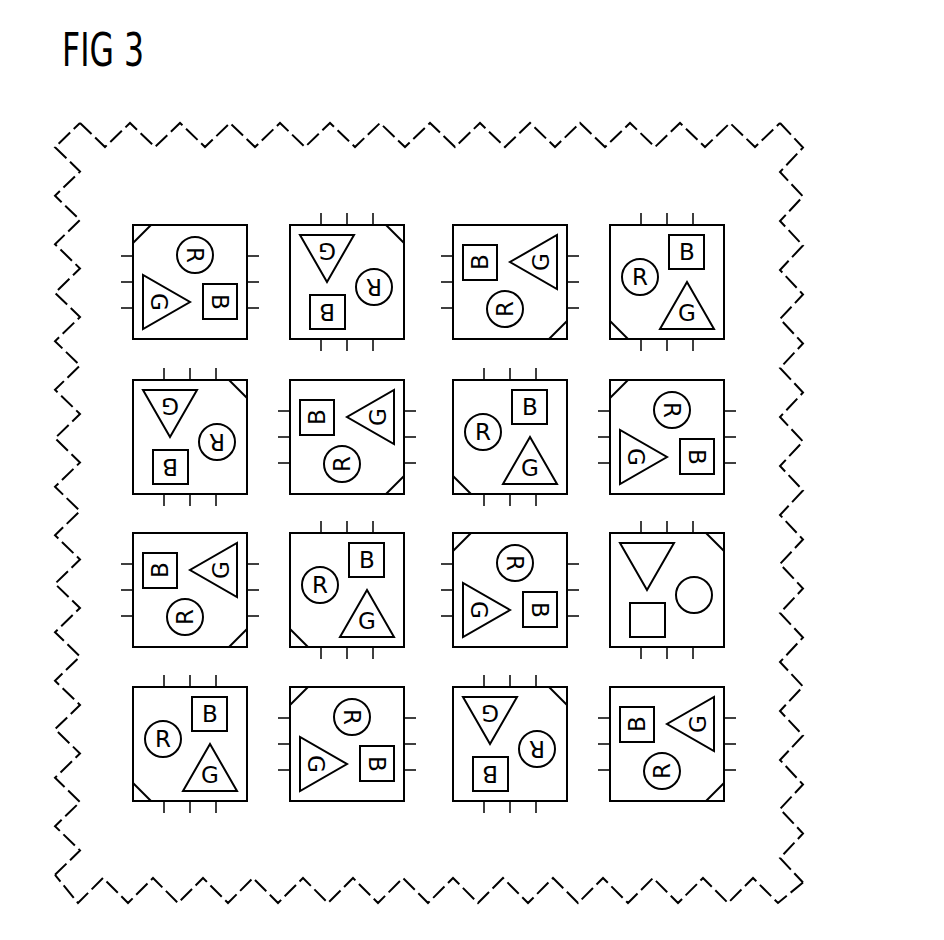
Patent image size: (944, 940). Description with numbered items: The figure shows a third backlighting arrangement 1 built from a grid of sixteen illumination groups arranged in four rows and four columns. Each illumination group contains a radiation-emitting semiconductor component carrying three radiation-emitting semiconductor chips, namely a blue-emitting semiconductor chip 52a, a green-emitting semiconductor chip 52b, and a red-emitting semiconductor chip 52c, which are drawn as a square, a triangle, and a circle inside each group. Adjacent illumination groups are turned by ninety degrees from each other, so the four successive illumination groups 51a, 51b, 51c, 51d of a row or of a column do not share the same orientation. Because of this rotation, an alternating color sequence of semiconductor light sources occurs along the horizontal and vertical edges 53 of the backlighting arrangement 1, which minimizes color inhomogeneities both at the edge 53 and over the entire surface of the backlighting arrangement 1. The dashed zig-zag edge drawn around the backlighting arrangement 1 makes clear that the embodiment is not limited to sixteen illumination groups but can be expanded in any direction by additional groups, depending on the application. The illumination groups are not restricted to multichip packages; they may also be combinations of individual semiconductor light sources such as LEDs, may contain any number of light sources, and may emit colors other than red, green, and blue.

The backlighting arrangement 1 is at (760, 103).
The edge 53 is at (442, 132).
The illumination group 51a is at (188, 221).
The illumination group 51b is at (335, 224).
The illumination group 51c is at (510, 224).
The illumination group 51d is at (660, 227).
The blue-emitting semiconductor chip 52a is at (630, 617).
The green-emitting semiconductor chip 52b is at (633, 567).
The red-emitting semiconductor chip 52c is at (712, 585).